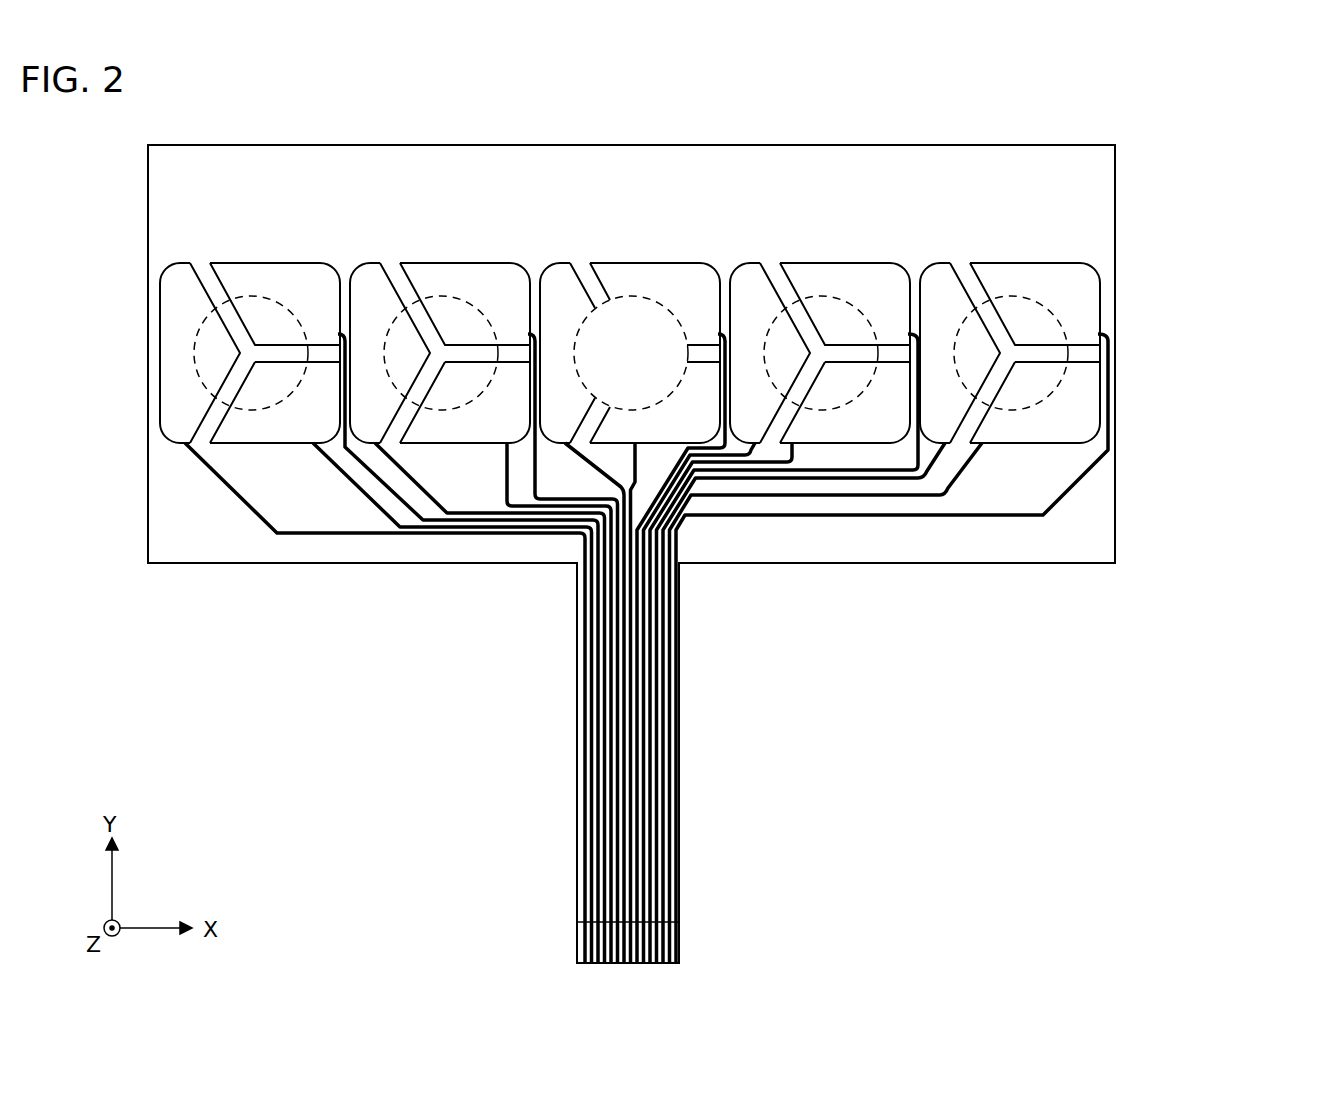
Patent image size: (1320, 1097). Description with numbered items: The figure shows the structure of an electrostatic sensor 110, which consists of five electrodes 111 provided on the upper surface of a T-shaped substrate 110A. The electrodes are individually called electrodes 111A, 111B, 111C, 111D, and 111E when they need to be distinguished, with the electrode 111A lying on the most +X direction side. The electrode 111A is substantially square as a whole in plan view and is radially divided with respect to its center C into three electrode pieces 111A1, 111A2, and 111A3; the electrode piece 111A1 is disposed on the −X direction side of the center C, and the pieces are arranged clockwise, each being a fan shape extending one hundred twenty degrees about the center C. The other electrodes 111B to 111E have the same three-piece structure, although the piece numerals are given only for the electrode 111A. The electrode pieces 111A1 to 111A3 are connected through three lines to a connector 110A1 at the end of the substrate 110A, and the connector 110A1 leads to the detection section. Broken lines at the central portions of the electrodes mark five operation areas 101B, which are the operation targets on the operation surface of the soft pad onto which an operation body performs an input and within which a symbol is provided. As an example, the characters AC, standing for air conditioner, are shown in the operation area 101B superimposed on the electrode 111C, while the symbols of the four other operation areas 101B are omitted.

The electrostatic sensor 110 is at (1182, 82).
The T-shaped substrate 110A is at (1070, 563).
The connector 110A1 is at (676, 937).
The electrodes 111 is at (740, 256).
The electrode 111A is at (1232, 203).
The electrode 111B is at (825, 263).
The electrode 111C is at (633, 263).
The electrode 111D is at (447, 263).
The electrode 111E is at (251, 263).
The electrode piece 111A1 is at (940, 268).
The electrode piece 111A2 is at (1093, 290).
The electrode piece 111A3 is at (1085, 380).
The operation area 101B is at (660, 297).
The center C is at (1013, 363).